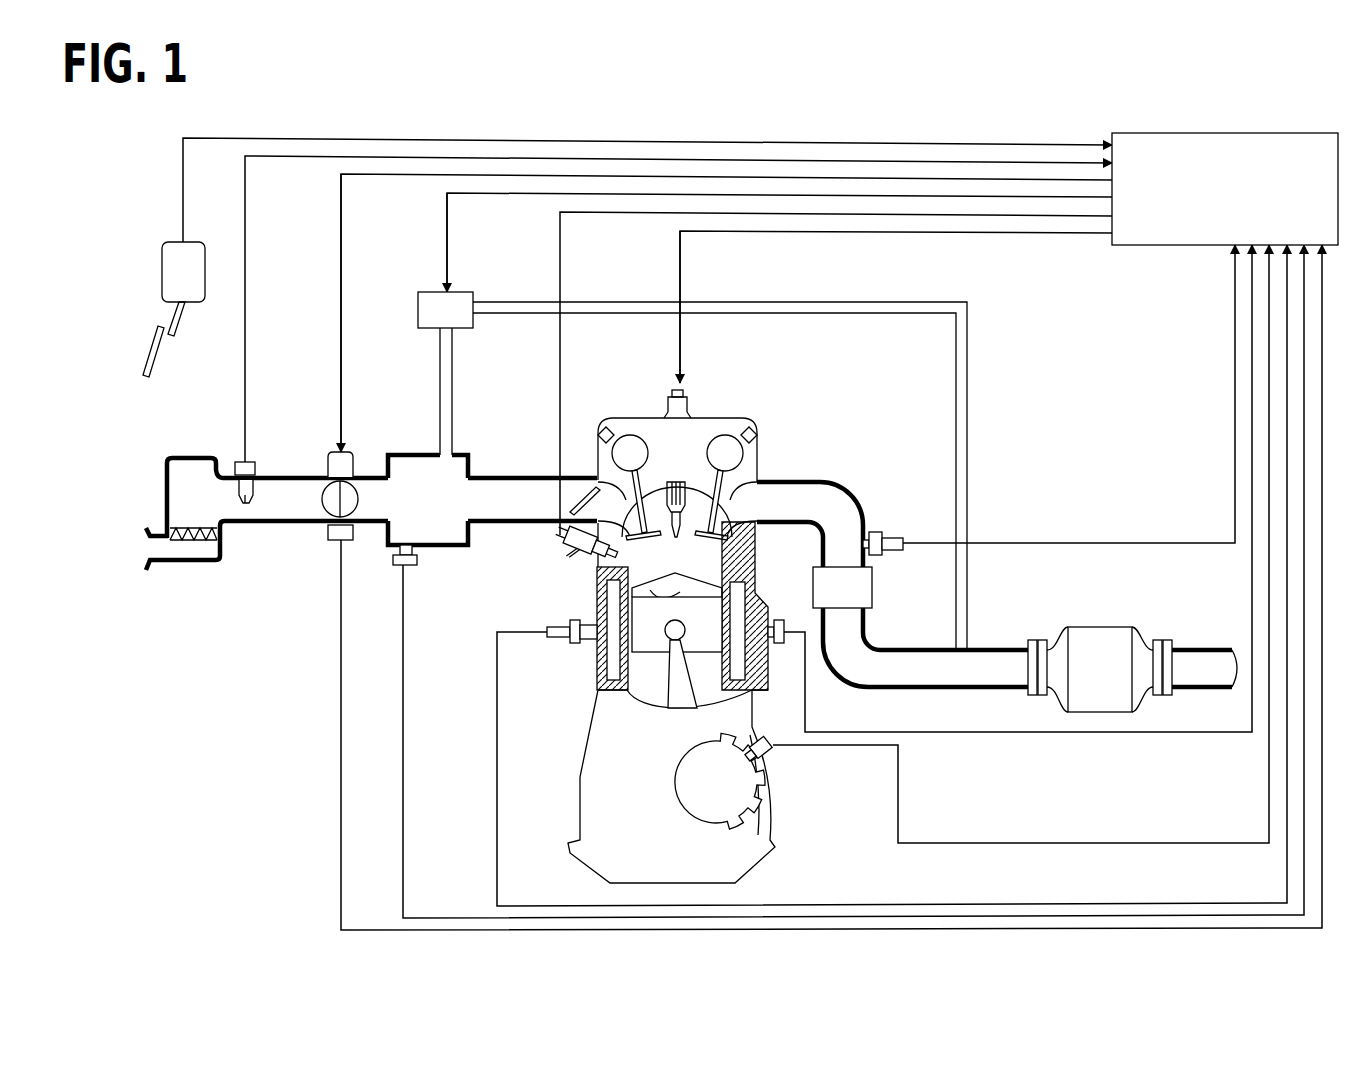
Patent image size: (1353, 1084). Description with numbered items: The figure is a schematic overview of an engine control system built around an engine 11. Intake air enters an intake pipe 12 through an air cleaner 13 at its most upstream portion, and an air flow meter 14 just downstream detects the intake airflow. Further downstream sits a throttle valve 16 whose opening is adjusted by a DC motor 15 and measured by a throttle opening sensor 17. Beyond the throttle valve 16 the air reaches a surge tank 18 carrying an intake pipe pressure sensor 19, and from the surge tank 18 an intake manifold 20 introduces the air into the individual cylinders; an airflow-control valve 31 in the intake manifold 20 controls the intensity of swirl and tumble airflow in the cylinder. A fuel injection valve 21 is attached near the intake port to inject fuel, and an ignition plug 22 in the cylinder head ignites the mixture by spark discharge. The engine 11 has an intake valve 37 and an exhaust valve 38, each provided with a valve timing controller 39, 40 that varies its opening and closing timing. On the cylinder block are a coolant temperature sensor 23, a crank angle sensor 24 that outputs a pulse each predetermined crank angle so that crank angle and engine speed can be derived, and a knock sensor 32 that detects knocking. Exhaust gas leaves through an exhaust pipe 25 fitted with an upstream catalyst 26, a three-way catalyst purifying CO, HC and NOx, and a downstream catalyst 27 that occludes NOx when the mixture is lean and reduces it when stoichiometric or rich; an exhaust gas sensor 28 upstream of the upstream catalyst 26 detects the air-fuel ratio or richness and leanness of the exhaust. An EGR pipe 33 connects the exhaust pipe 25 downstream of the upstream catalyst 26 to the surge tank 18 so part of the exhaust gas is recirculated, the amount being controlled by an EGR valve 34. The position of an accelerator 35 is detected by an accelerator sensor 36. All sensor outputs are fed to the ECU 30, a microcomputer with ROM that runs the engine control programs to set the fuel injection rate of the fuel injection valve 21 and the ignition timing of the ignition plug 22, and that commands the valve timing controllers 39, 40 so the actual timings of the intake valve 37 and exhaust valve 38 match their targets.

The engine 11 is at (745, 418).
The intake pipe 12 is at (292, 478).
The air cleaner 13 is at (190, 545).
The air flow meter 14 is at (240, 462).
The DC motor 15 is at (333, 452).
The throttle valve 16 is at (352, 492).
The throttle opening sensor 17 is at (330, 540).
The surge tank 18 is at (455, 548).
The intake pipe pressure sensor 19 is at (398, 565).
The intake manifold 20 is at (500, 478).
The fuel injection valve 21 is at (568, 555).
The ignition plug 22 is at (690, 447).
The coolant temperature sensor 23 is at (572, 643).
The crank angle sensor 24 is at (775, 757).
The exhaust pipe 25 is at (845, 482).
The upstream catalyst 26 is at (873, 590).
The downstream catalyst 27 is at (1105, 627).
The exhaust gas sensor 28 is at (882, 532).
The ECU 30 is at (1165, 248).
The airflow-control valve 31 is at (580, 487).
The knock sensor 32 is at (774, 620).
The EGR pipe 33 is at (515, 302).
The EGR valve 34 is at (432, 292).
The accelerator 35 is at (153, 350).
The accelerator sensor 36 is at (197, 242).
The intake valve 37 is at (598, 583).
The exhaust valve 38 is at (778, 520).
The valve timing controller 39 is at (637, 440).
The valve timing controller 40 is at (758, 450).